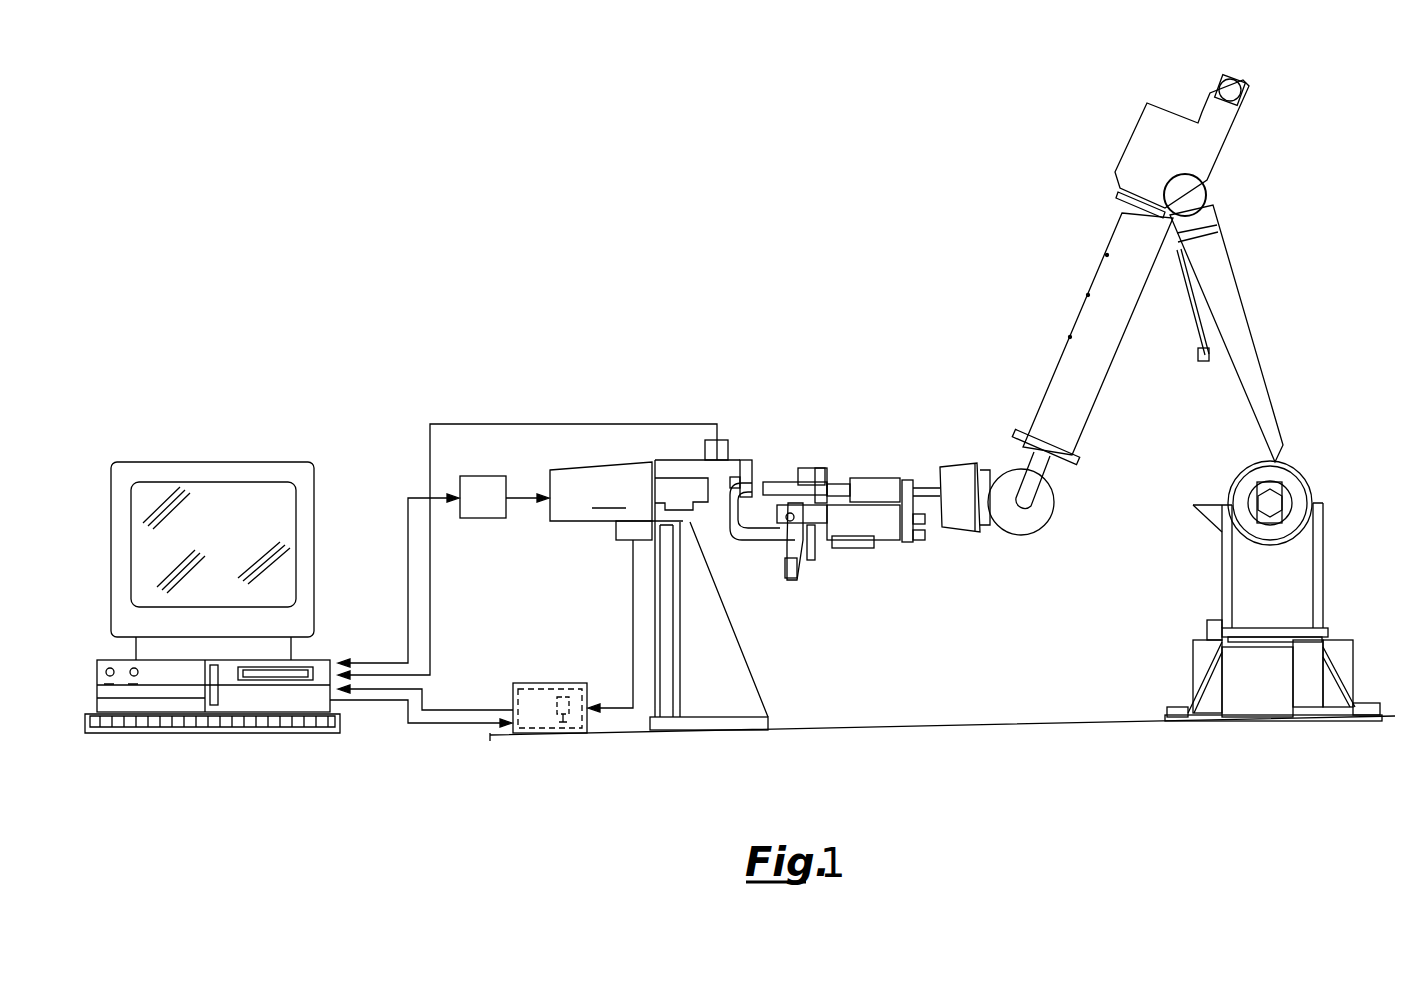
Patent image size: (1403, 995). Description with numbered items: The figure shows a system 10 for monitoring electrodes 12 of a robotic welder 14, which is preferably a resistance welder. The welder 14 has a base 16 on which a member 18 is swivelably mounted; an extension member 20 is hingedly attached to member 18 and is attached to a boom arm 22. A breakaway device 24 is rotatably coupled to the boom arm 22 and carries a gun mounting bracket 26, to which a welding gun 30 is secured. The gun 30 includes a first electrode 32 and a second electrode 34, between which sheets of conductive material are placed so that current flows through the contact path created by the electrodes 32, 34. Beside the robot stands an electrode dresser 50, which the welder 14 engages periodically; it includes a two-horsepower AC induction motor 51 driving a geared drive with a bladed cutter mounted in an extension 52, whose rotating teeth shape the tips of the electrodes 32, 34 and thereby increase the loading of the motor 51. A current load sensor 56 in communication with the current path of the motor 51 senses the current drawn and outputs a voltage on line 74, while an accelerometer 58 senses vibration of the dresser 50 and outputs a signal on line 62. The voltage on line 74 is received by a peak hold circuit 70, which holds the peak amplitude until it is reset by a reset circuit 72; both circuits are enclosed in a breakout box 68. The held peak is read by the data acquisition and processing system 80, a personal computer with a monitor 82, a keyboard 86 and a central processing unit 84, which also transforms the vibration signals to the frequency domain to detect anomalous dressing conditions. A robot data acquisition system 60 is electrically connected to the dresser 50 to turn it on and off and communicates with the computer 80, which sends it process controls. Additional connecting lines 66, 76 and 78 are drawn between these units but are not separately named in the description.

The system 10 is at (694, 297).
The electrodes 12 is at (829, 451).
The robotic welder 14 is at (1277, 308).
The base 16 is at (1168, 707).
The member 18 is at (1325, 553).
The extension member 20 is at (1258, 386).
The boom arm 22 is at (1115, 352).
The breakaway device 24 is at (940, 467).
The gun mounting bracket 26 is at (870, 472).
The welding gun 30 is at (797, 568).
The first electrode 32 is at (740, 532).
The second electrode 34 is at (780, 545).
The electrode dresser 50 is at (671, 462).
The AC induction motor 51 is at (601, 491).
The extension 52 is at (740, 460).
The current load sensor 56 is at (616, 534).
The accelerometer 58 is at (728, 440).
The robot data acquisition system 60 is at (480, 519).
The line 62 is at (475, 423).
The signal line 66 is at (408, 542).
The breakout box 68 is at (546, 683).
The peak hold circuit 70 is at (538, 735).
The reset circuit 72 is at (568, 730).
The line 74 is at (633, 602).
The data line 76 is at (468, 708).
The data line 78 is at (438, 724).
The data acquisition and processing system 80 is at (208, 453).
The monitor 82 is at (316, 468).
The central processing unit 84 is at (320, 662).
The keyboard 86 is at (302, 733).